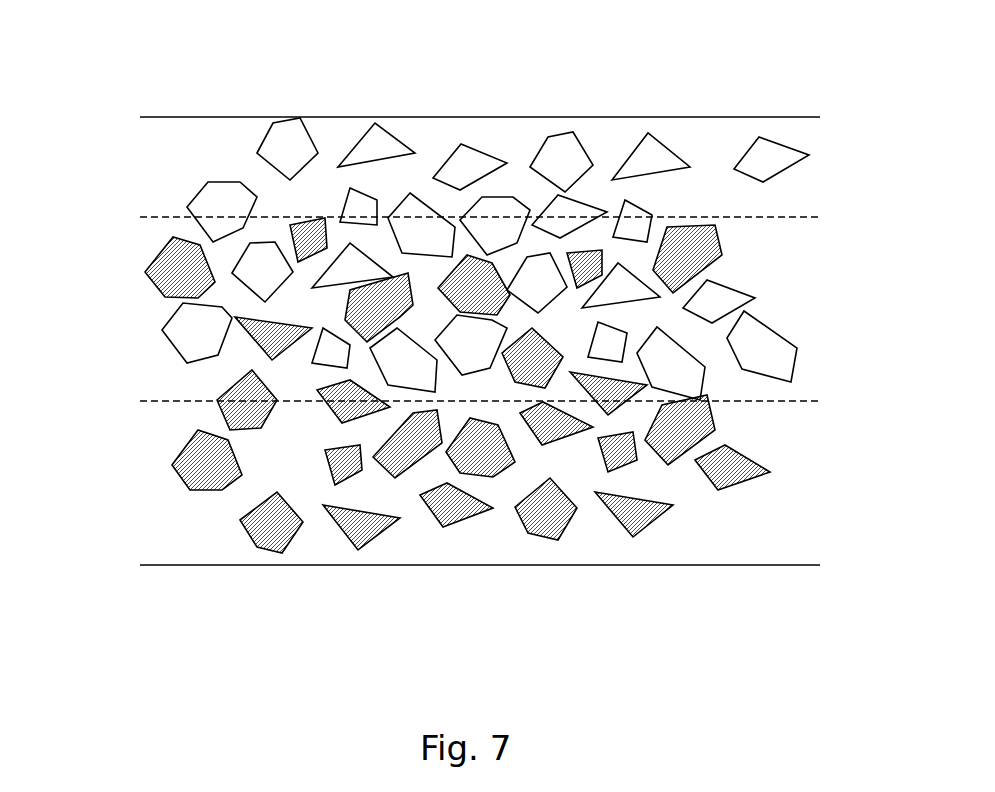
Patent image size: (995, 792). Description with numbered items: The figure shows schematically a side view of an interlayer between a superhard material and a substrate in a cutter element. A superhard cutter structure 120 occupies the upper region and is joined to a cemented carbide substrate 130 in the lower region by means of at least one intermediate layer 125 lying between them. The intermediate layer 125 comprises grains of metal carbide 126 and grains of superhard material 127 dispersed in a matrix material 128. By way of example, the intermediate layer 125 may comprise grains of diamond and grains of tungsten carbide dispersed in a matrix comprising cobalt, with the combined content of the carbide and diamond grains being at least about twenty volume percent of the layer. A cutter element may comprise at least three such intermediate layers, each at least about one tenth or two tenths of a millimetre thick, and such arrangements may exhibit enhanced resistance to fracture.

The superhard cutter structure 120 is at (122, 118).
The intermediate layer 125 is at (122, 223).
The cemented carbide substrate 130 is at (122, 407).
The grains of metal carbide 126 is at (547, 523).
The grains of superhard material 127 is at (475, 158).
The matrix material 128 is at (735, 250).